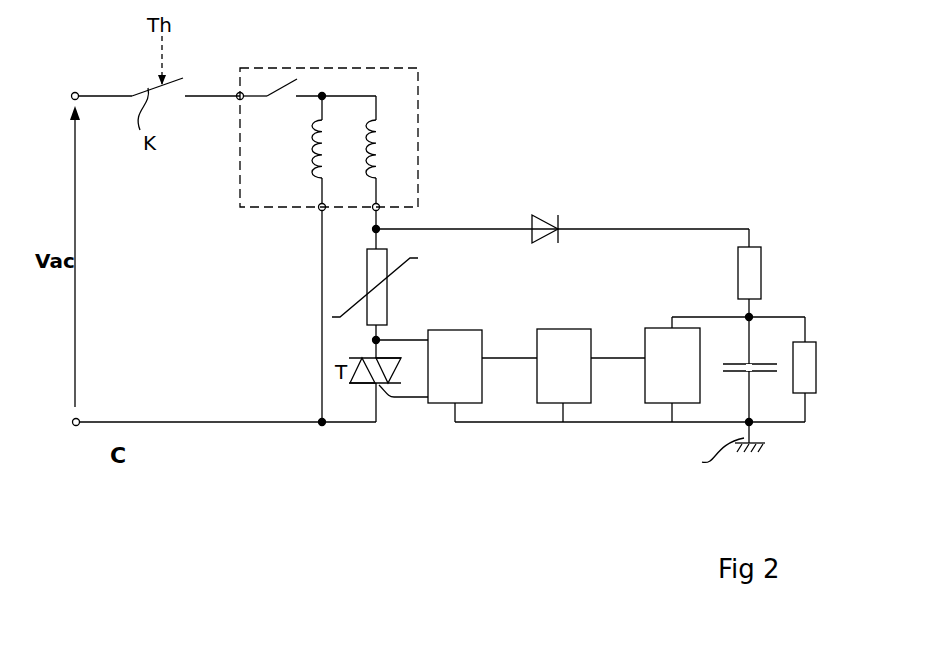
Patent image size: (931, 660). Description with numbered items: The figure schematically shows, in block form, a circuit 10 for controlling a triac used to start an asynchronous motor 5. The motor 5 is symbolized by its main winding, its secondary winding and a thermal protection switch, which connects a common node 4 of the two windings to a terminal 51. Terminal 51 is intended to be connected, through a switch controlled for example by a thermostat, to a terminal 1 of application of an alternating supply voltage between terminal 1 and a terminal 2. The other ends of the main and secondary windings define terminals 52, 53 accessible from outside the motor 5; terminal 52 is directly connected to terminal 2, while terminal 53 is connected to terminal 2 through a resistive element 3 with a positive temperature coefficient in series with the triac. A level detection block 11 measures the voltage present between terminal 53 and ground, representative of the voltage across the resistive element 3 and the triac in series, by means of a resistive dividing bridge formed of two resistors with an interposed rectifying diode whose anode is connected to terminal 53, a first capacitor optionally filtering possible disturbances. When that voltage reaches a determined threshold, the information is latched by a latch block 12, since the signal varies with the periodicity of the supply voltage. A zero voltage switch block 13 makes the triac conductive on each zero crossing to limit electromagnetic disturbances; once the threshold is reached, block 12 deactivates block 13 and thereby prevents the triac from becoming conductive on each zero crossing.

The terminal 1 is at (73, 92).
The terminal 2 is at (72, 423).
The resistive element with positive temperature coefficient 3 is at (388, 296).
The common node 4 is at (323, 94).
The asynchronous motor 5 is at (418, 96).
The circuit for controlling a triac 10 is at (613, 373).
The level detection block 11 is at (661, 328).
The latch block 12 is at (547, 329).
The zero voltage switch block 13 is at (462, 330).
The terminal 51 is at (238, 93).
The terminal 52 is at (319, 209).
The terminal 53 is at (378, 210).